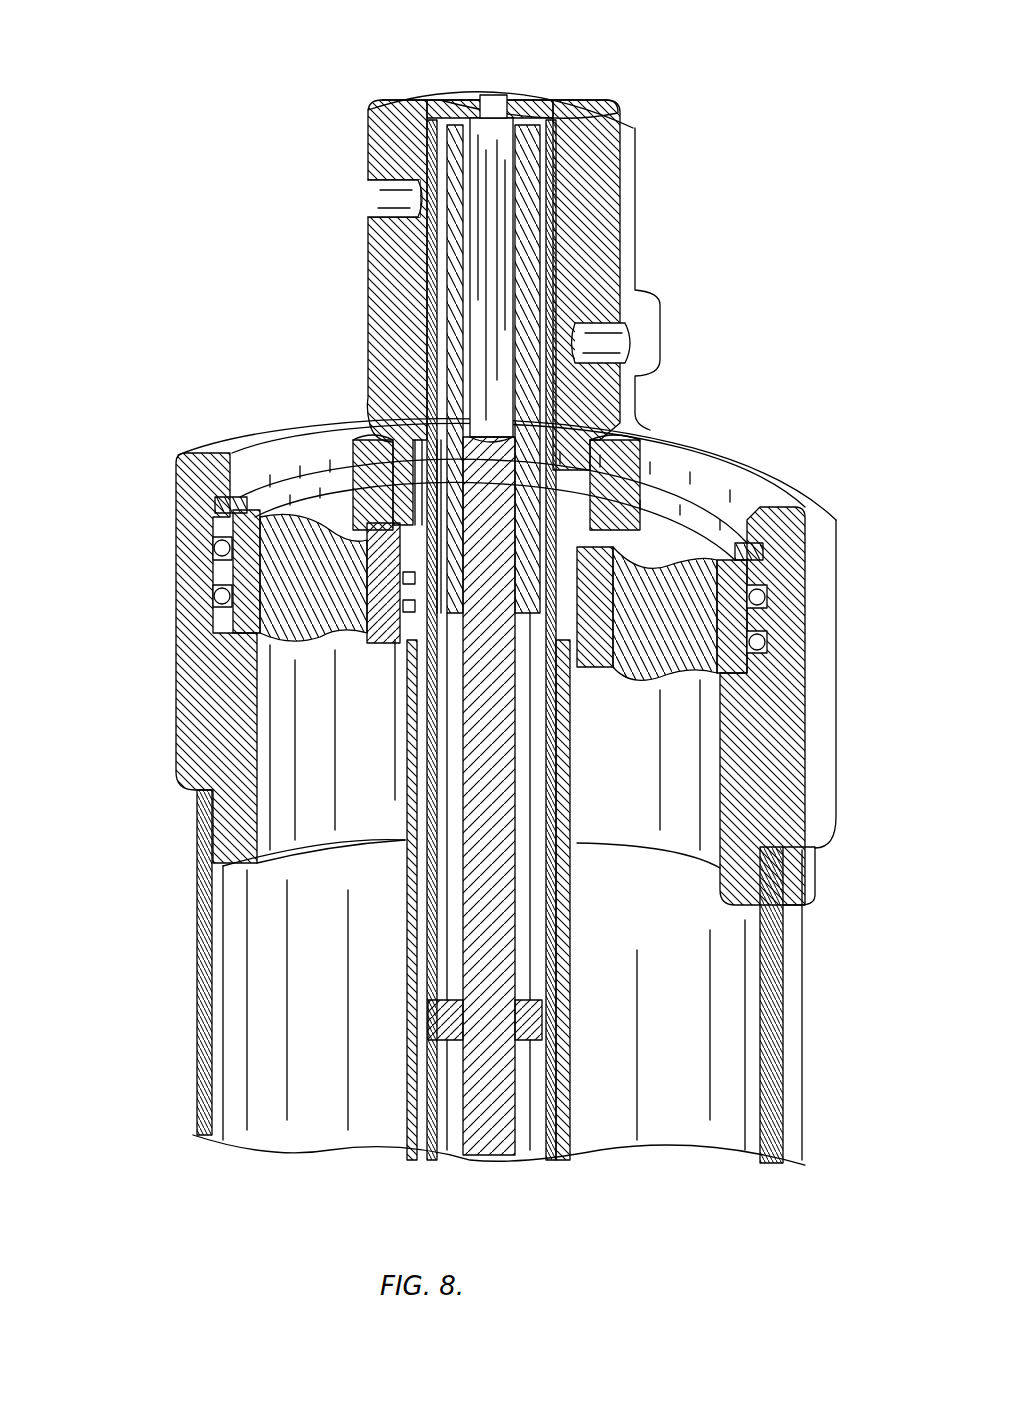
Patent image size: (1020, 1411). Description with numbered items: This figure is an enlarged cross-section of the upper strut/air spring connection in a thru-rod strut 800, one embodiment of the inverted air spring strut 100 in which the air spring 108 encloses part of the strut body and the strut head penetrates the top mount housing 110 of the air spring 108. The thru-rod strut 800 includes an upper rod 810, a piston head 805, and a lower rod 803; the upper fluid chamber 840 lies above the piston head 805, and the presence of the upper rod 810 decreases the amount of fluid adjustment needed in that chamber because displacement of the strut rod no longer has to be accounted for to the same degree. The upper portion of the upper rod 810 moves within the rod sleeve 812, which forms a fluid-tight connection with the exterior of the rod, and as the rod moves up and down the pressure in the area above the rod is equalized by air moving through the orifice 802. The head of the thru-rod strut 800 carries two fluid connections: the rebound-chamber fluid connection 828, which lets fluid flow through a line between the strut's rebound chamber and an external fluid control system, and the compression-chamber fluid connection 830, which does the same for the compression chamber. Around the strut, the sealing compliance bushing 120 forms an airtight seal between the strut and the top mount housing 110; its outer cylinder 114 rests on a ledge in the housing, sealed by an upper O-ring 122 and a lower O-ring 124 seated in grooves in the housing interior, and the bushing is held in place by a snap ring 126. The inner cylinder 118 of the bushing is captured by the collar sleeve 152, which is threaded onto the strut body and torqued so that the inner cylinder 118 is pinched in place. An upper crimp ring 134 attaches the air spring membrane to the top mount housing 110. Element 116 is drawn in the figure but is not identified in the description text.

The inverted air spring strut 100 is at (76, 148).
The air spring 108 is at (790, 1010).
The top mount housing 110 is at (830, 638).
The outer cylinder 114 is at (236, 640).
The bearing housing 116 is at (186, 500).
The inner cylinder 118 is at (340, 530).
The sealing compliance bushing 120 is at (326, 590).
The upper O-ring 122 is at (213, 548).
The lower O-ring 124 is at (213, 596).
The snap ring 126 is at (790, 548).
The upper crimp ring 134 is at (812, 870).
The collar sleeve 152 is at (643, 507).
The thru-rod strut 800 is at (432, 55).
The orifice 802 is at (530, 90).
The lower rod 803 is at (472, 1150).
The piston head 805 is at (445, 1017).
The upper rod 810 is at (472, 812).
The rod sleeve 812 is at (540, 290).
The rebound-chamber fluid connection 828 is at (368, 200).
The compression-chamber fluid connection 830 is at (640, 345).
The upper fluid chamber 840 is at (428, 948).